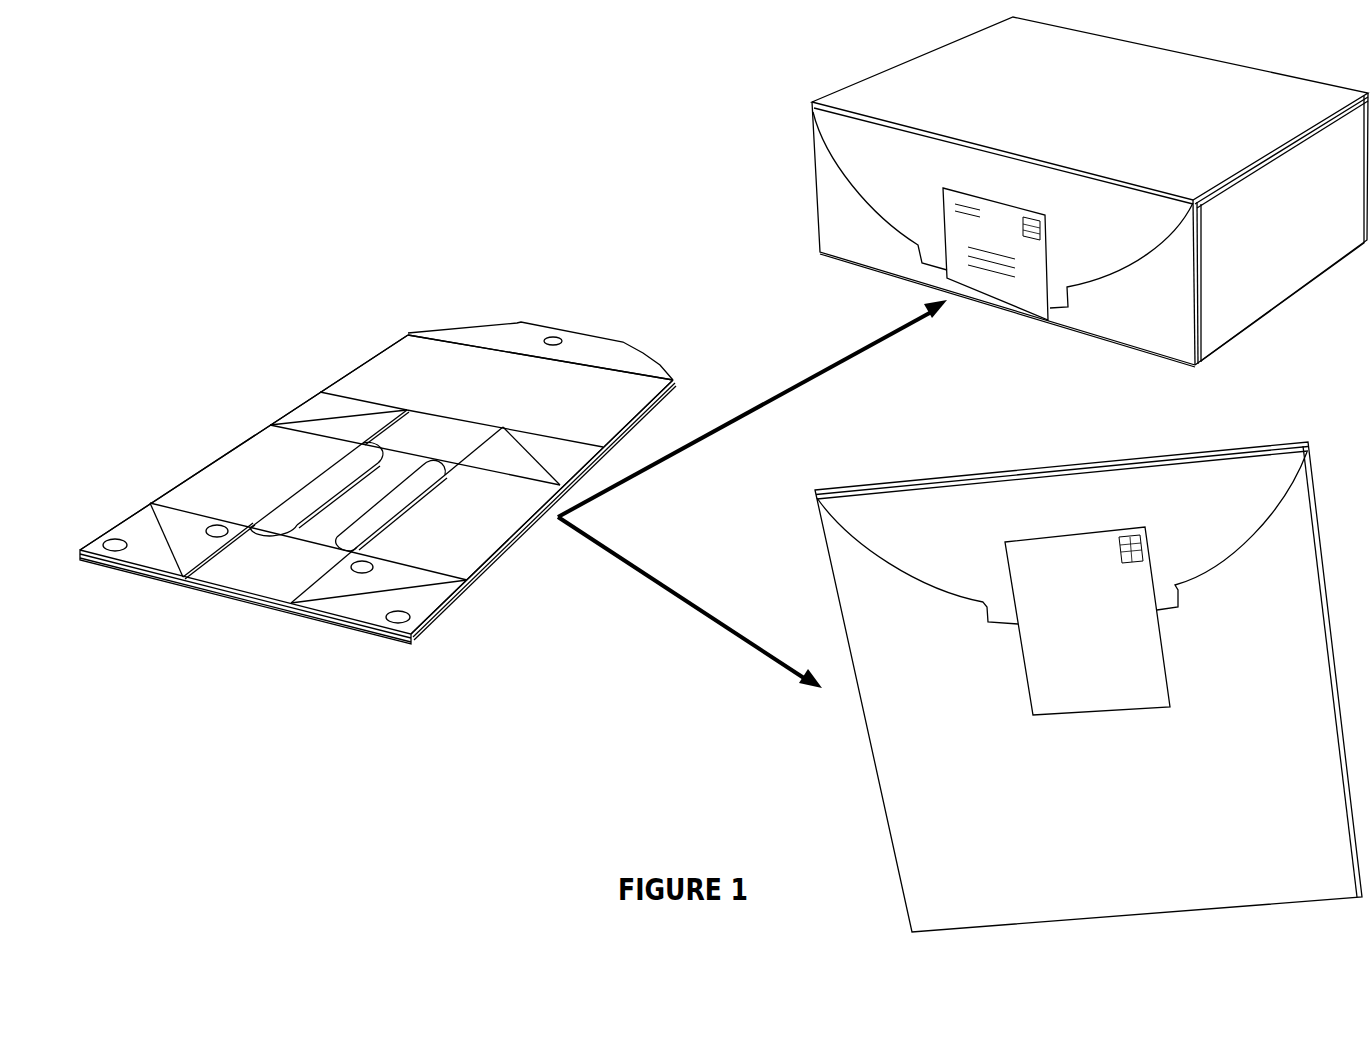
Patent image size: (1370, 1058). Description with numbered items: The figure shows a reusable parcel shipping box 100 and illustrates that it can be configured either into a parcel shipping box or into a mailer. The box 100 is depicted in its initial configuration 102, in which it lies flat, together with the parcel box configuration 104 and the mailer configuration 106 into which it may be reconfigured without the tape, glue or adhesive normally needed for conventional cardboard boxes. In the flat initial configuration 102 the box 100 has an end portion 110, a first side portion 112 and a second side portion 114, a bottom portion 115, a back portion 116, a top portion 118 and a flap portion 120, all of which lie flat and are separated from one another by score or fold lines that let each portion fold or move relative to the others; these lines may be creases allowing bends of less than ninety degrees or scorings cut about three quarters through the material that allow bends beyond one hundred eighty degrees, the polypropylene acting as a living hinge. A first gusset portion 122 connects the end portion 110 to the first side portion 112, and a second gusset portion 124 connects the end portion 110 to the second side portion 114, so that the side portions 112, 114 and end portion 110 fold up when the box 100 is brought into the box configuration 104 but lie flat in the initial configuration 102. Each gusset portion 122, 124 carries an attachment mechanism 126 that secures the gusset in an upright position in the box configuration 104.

The reusable parcel shipping box 100 is at (272, 198).
The initial configuration 102 is at (216, 408).
The parcel box configuration 104 is at (1108, 124).
The mailer configuration 106 is at (1135, 833).
The end portion 110 is at (233, 598).
The first side portion 112 is at (213, 462).
The second side portion 114 is at (517, 535).
The bottom portion 115 is at (367, 487).
The back portion 116 is at (430, 428).
The top portion 118 is at (505, 395).
The flap portion 120 is at (590, 349).
The first gusset portion 122 is at (145, 562).
The second gusset portion 124 is at (364, 632).
The attachment mechanism 126 is at (553, 337).